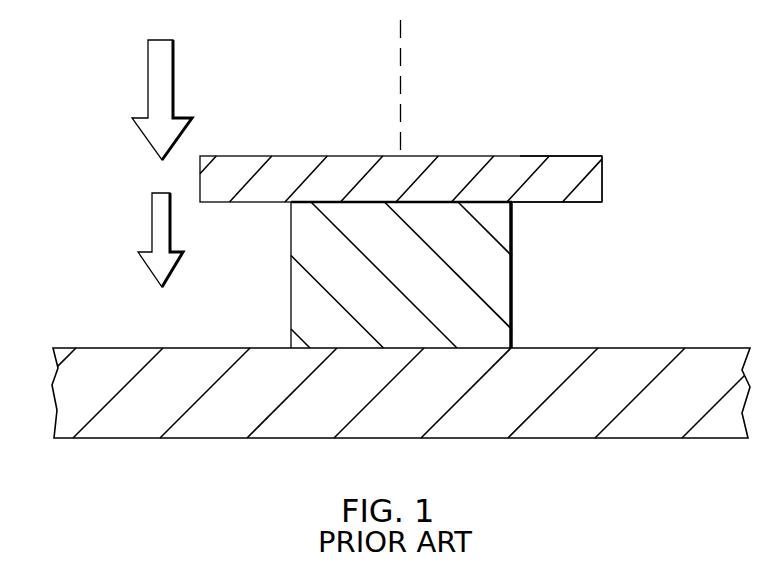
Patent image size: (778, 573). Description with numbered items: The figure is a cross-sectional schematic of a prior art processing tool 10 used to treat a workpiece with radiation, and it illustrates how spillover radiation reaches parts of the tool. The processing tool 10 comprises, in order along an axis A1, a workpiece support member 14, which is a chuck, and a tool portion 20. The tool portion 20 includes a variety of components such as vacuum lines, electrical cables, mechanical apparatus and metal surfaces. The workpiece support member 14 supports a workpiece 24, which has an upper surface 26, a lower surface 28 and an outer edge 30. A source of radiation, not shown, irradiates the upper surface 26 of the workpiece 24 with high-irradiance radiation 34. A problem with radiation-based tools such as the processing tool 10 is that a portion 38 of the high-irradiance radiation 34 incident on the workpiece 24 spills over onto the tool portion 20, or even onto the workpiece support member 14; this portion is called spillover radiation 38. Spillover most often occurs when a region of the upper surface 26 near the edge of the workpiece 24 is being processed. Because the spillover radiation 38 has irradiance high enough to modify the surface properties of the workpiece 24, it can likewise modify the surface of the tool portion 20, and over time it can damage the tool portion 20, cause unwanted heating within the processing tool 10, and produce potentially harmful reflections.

The processing tool 10 is at (606, 54).
The workpiece support member 14 is at (495, 284).
The tool portion 20 is at (102, 347).
The workpiece 24 is at (515, 165).
The upper surface 26 is at (581, 155).
The lower surface 28 is at (580, 204).
The outer edge 30 is at (602, 179).
The high-irradiance radiation 34 is at (153, 76).
The spillover radiation 38 is at (160, 228).
The axis A1 is at (401, 50).